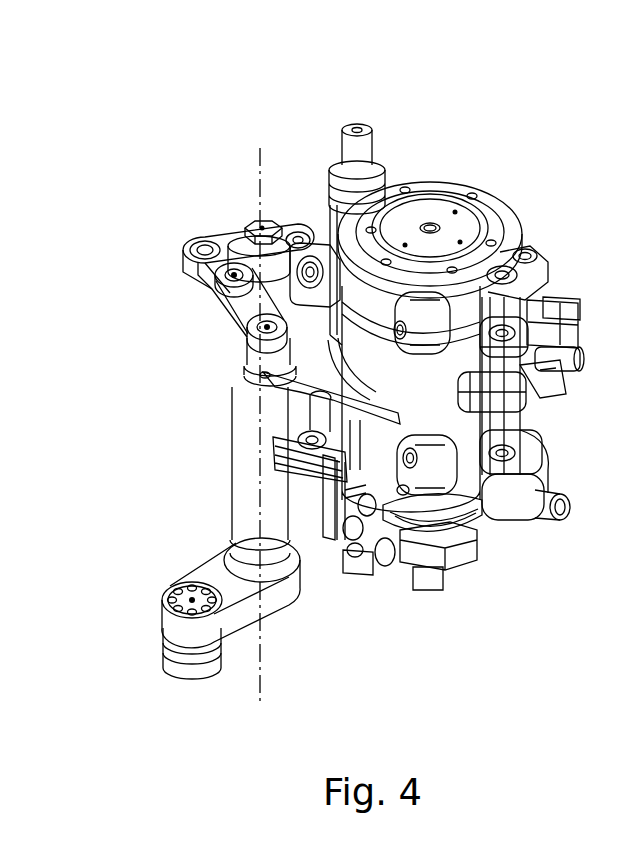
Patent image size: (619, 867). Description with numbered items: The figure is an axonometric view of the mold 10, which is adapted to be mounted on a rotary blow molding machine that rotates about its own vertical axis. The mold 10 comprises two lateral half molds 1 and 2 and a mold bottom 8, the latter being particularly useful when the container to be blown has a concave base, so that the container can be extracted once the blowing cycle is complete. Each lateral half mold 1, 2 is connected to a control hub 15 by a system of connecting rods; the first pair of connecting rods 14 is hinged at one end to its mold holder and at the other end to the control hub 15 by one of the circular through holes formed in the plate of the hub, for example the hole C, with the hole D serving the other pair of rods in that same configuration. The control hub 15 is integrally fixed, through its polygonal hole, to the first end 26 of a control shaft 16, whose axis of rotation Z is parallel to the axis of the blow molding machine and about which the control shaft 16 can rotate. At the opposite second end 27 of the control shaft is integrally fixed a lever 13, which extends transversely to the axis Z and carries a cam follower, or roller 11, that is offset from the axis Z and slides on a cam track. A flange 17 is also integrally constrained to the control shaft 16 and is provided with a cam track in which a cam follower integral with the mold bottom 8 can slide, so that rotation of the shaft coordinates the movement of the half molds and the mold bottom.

The mold 10 is at (380, 104).
The lateral half mold 2 is at (527, 210).
The first end of the control shaft 26 is at (252, 222).
The circular through hole C is at (292, 237).
The circular through hole D is at (208, 252).
The control hub 15 is at (215, 252).
The first pair of connecting rods 14 is at (232, 345).
The lateral half mold 1 is at (350, 367).
The control shaft 16 is at (247, 523).
The second end of the control shaft 27 is at (225, 557).
The lever 13 is at (163, 595).
The roller 11 is at (197, 670).
The axis of rotation Z is at (262, 665).
The flange 17 is at (327, 538).
The mold bottom 8 is at (462, 522).